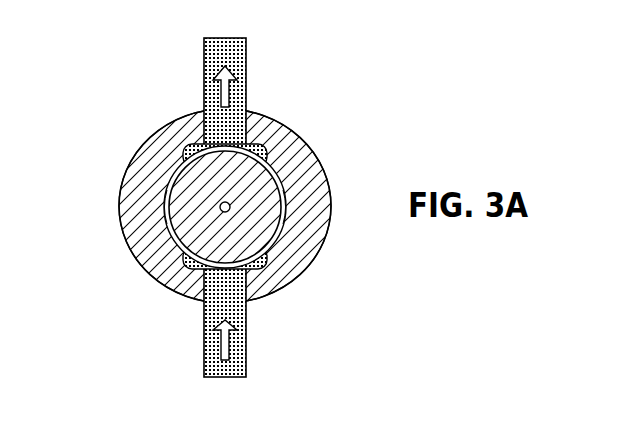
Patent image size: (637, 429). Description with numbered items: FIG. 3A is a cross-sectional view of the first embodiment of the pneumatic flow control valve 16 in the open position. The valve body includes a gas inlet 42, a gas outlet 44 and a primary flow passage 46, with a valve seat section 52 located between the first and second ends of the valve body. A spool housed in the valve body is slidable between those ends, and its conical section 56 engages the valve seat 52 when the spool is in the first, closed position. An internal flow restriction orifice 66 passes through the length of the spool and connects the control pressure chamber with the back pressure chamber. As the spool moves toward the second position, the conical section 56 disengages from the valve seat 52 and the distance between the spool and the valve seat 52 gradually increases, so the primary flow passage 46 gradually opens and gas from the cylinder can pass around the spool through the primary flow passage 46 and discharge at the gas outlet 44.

The valve assembly 16 is at (271, 207).
The gas inlet 42 is at (238, 343).
The gas outlet 44 is at (238, 62).
The primary flow passage 46 is at (290, 207).
The valve seat section 52 is at (265, 148).
The conical section 56 is at (282, 186).
The internal flow restriction orifice 66 is at (220, 207).